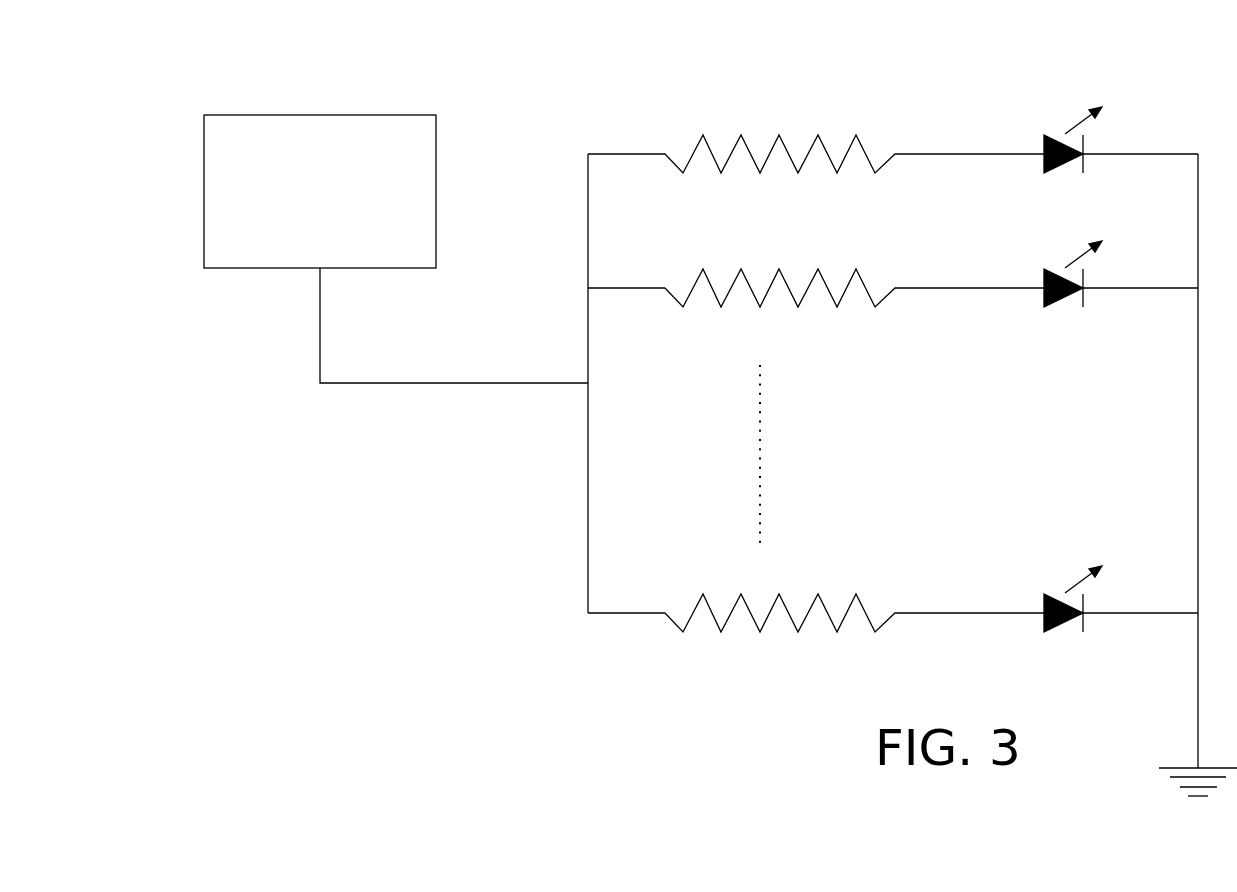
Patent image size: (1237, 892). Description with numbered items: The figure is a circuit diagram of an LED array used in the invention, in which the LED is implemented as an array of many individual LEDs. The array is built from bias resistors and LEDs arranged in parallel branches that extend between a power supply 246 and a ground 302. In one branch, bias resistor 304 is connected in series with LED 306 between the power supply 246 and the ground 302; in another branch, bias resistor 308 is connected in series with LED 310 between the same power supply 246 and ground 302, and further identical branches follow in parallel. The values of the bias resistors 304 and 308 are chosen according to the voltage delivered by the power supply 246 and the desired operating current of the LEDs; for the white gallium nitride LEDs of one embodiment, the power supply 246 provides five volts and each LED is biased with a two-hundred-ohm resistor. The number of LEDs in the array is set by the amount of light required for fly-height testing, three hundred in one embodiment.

The power supply 246 is at (243, 268).
The ground 302 is at (1198, 690).
The bias resistor 304 is at (779, 135).
The LED 306 is at (1045, 135).
The bias resistor 308 is at (798, 307).
The LED 310 is at (1047, 307).